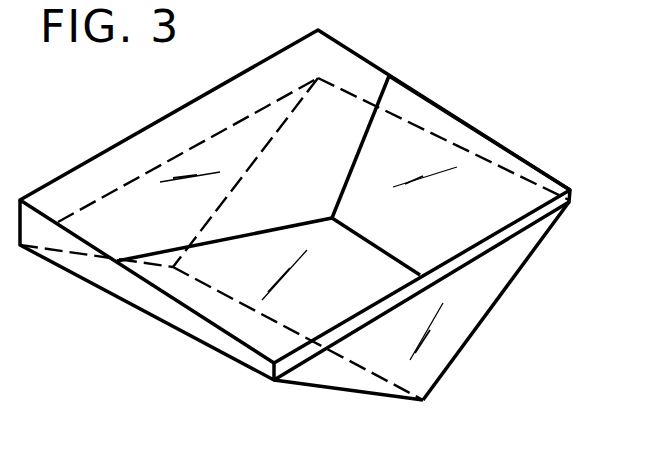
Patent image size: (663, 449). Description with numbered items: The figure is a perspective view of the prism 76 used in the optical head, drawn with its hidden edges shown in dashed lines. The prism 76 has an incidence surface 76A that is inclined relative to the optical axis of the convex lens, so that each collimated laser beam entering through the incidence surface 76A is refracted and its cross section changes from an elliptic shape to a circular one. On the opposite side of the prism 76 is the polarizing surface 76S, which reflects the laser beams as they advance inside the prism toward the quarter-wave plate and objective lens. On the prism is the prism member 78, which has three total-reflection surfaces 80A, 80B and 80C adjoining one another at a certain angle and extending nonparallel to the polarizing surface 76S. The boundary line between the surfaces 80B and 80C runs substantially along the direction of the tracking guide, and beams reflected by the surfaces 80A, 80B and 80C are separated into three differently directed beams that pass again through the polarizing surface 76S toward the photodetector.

The prism member 78 is at (110, 163).
The total-reflection surface 80A is at (368, 78).
The total-reflection surface 80B is at (202, 307).
The total-reflection surface 80C is at (477, 142).
The prism 76 is at (495, 295).
The polarizing surface 76S is at (543, 220).
The incidence surface 76A is at (331, 395).